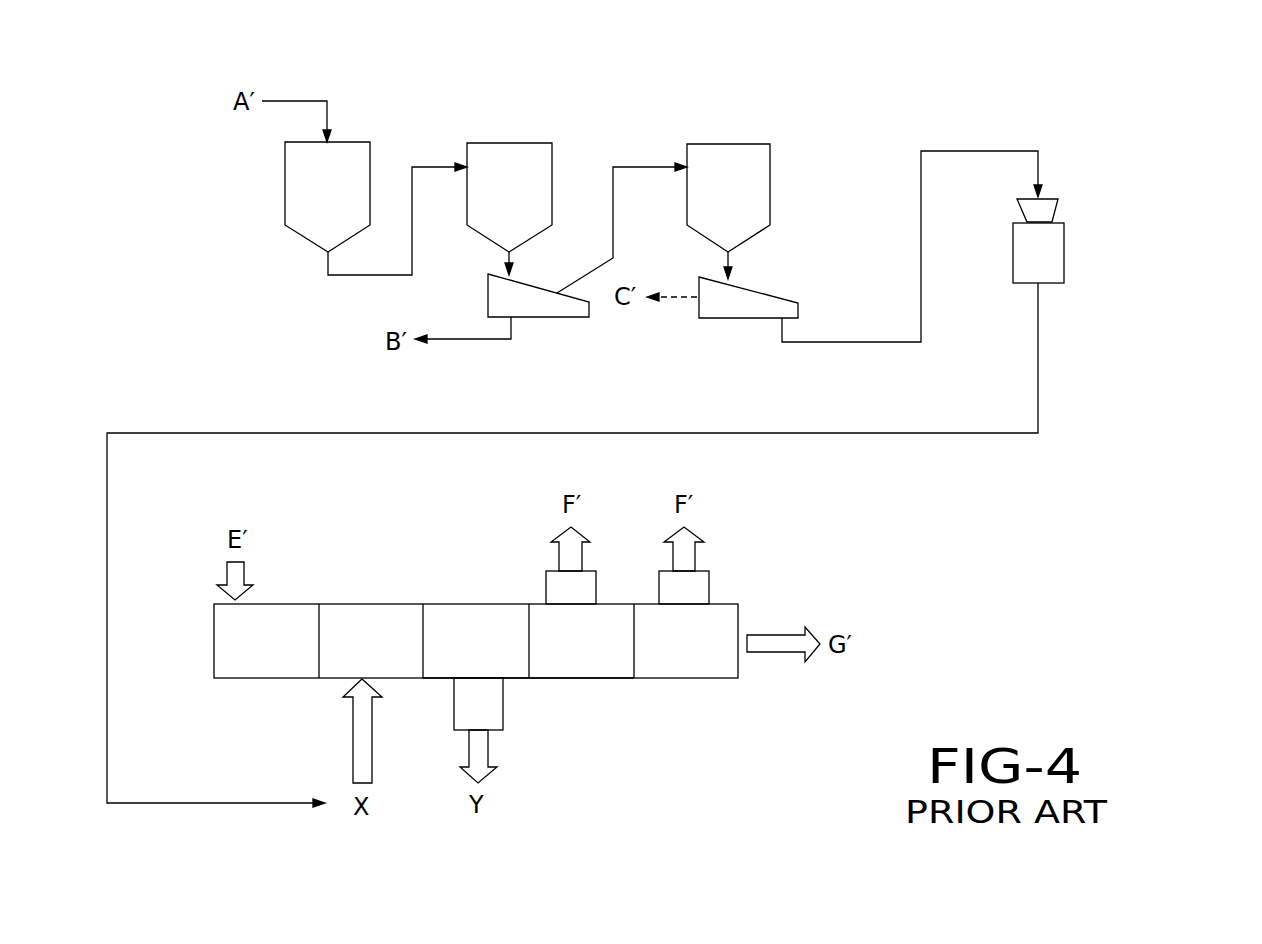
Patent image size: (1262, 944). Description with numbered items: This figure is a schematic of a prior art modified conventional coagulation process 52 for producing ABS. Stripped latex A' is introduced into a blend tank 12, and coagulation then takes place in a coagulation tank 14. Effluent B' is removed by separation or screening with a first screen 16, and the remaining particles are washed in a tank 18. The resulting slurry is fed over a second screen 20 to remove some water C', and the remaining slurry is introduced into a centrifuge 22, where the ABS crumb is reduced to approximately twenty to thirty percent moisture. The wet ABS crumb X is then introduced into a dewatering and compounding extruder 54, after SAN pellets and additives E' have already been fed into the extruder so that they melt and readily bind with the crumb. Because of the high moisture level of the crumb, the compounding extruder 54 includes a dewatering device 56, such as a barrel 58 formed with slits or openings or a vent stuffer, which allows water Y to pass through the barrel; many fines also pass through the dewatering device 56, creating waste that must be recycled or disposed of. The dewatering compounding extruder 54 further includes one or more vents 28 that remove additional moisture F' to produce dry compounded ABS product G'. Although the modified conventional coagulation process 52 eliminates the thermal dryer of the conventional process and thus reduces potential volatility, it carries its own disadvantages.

The blend tank 12 is at (357, 142).
The coagulation tank 14 is at (552, 160).
The first screen 16 is at (550, 318).
The tank 18 is at (770, 166).
The second screen 20 is at (760, 292).
The centrifuge 22 is at (1064, 230).
The vents 28 is at (546, 588).
The modified conventional coagulation process 52 is at (1214, 143).
The dewatering and compounding extruder 54 is at (270, 684).
The dewatering device 56 is at (503, 718).
The barrel 58 is at (520, 680).